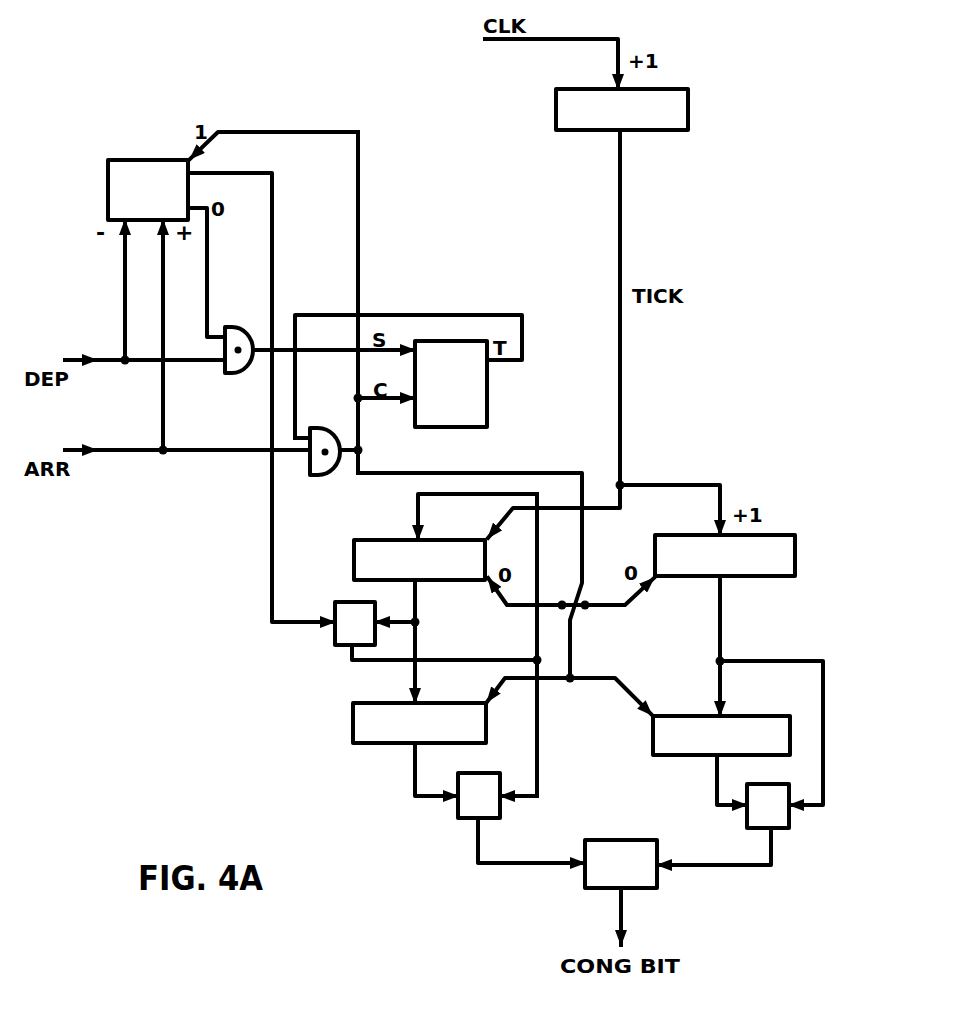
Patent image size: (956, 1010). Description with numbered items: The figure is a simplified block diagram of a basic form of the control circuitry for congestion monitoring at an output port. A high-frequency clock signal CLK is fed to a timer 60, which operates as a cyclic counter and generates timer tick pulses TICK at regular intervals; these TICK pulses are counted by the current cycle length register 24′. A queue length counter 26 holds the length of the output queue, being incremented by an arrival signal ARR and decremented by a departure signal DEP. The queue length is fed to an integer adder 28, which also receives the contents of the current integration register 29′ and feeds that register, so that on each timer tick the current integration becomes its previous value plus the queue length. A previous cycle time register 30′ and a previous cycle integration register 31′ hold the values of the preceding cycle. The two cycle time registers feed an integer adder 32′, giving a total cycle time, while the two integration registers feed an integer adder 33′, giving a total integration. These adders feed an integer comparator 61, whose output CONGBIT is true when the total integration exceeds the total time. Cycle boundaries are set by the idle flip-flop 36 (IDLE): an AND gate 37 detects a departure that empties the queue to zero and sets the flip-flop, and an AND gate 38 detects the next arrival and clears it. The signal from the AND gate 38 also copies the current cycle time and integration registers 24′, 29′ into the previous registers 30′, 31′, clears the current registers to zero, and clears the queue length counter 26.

The queue length counter 26 is at (140, 160).
The AND gate 37 is at (240, 373).
The AND gate 38 is at (326, 475).
The idle flip-flop 36 is at (453, 427).
The timer 60 is at (556, 104).
The integer adder 28 is at (338, 604).
The current integration register 29′ is at (455, 580).
The current cycle length register 24′ is at (760, 576).
The previous cycle integration register 31′ is at (353, 726).
The previous cycle time register 30′ is at (750, 716).
The integer adder 33′ is at (492, 818).
The integer adder 32′ is at (752, 828).
The integer comparator 61 is at (624, 840).